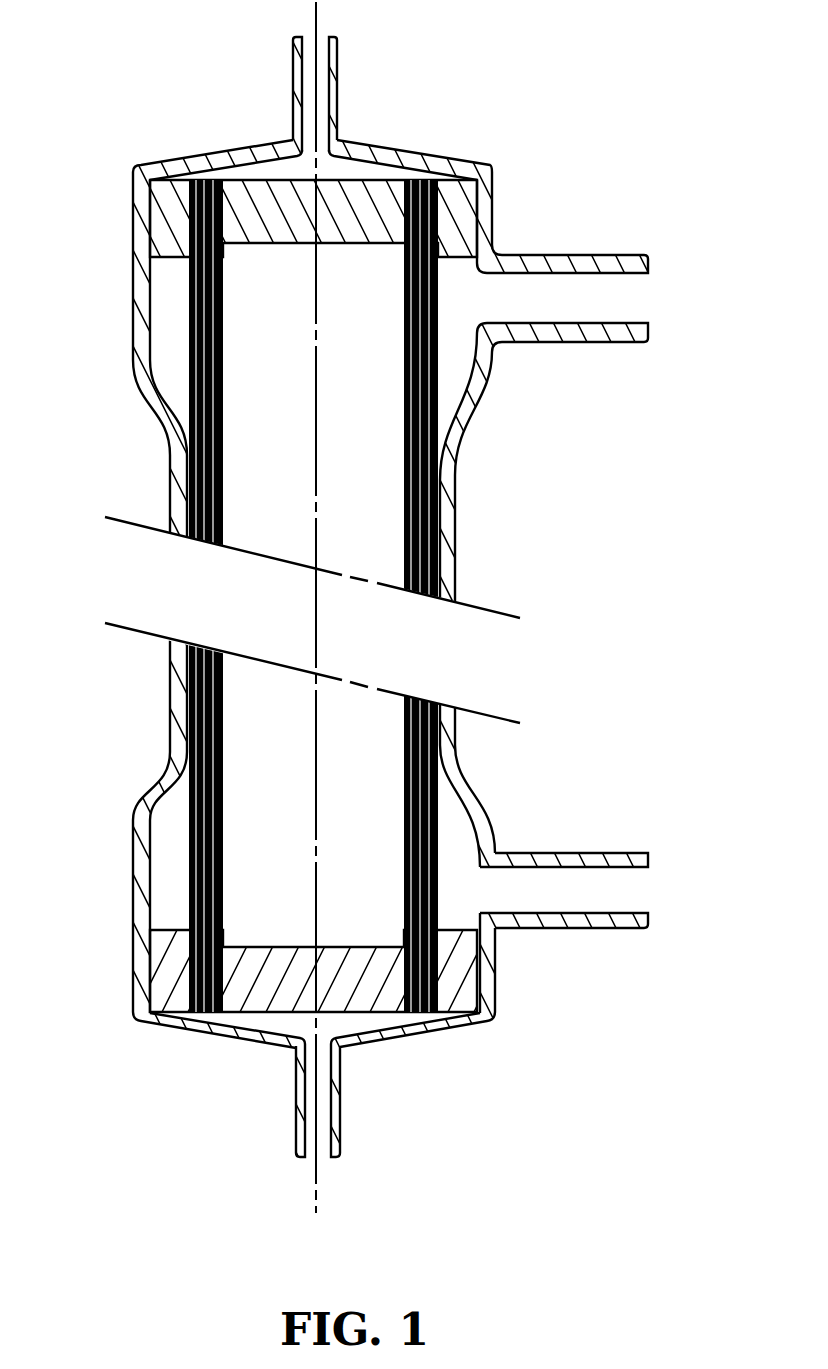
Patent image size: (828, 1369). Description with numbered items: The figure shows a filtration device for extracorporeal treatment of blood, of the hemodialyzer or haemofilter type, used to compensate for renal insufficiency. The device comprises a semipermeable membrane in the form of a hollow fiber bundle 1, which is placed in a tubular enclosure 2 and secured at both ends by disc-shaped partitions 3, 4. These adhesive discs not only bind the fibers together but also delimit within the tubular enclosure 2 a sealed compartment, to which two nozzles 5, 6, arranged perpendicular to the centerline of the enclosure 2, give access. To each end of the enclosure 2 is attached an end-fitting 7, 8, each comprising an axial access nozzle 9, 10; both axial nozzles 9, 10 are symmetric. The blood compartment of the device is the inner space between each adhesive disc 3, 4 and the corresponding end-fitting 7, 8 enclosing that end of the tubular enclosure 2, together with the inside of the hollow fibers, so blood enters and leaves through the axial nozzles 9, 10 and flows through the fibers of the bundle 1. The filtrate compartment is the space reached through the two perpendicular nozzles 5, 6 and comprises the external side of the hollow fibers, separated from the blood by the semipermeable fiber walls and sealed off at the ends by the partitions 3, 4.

The hollow fiber bundle 1 is at (414, 684).
The tubular enclosure 2 is at (447, 485).
The disc-shaped partition 3 is at (385, 182).
The disc-shaped partition 4 is at (385, 1000).
The nozzle 5 is at (590, 258).
The nozzle 6 is at (593, 930).
The end-fitting 7 is at (207, 162).
The end-fitting 8 is at (218, 1028).
The axial access nozzle 9 is at (322, 62).
The axial access nozzle 10 is at (322, 1132).